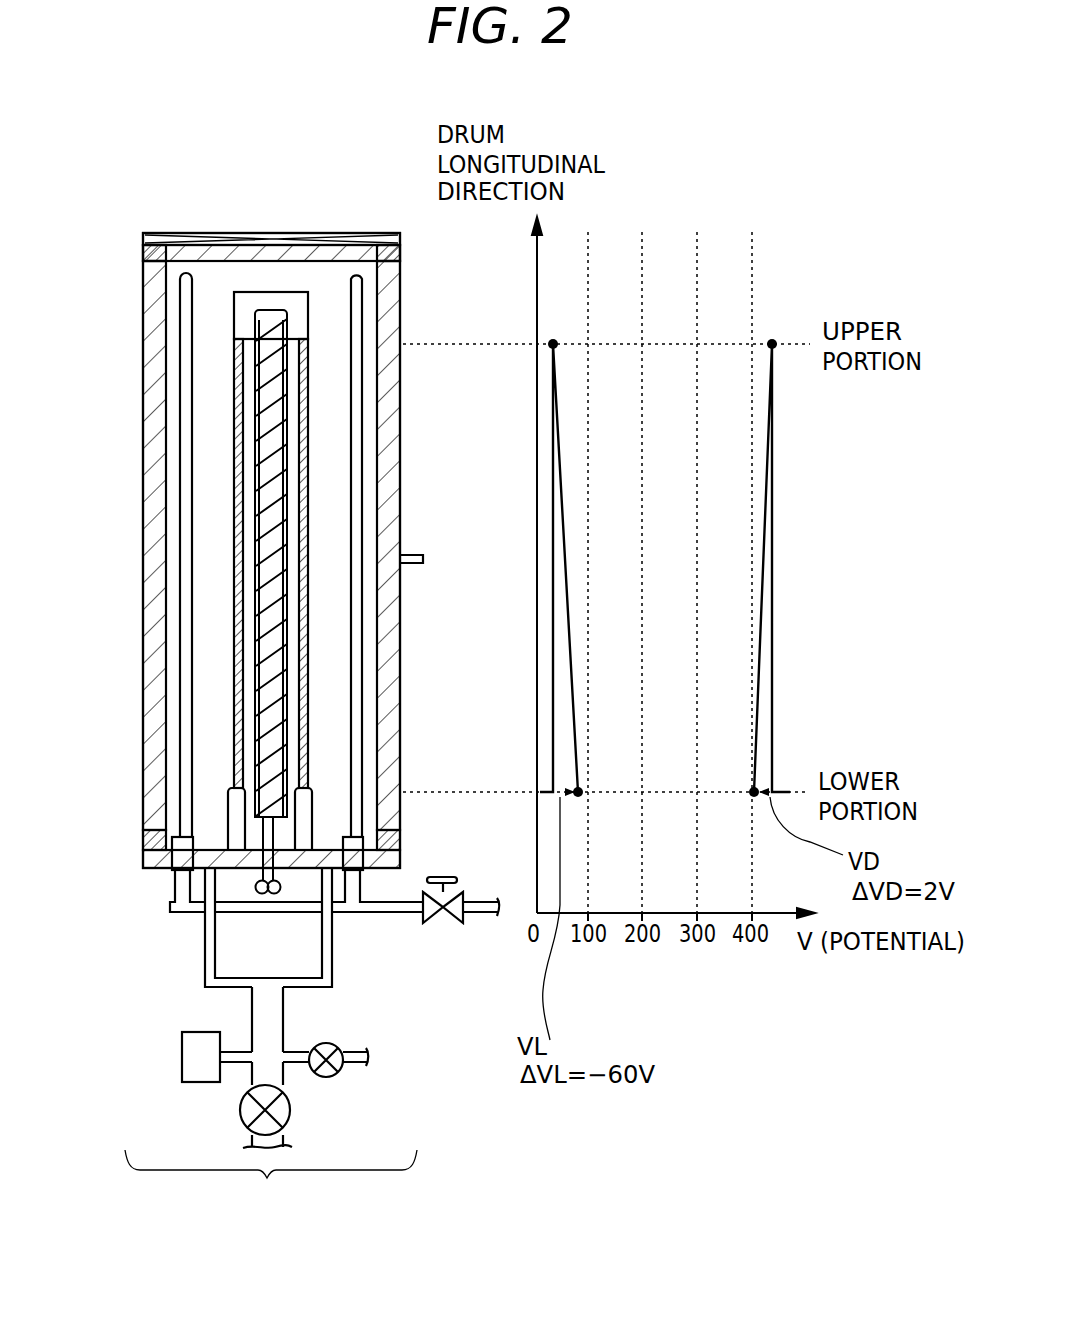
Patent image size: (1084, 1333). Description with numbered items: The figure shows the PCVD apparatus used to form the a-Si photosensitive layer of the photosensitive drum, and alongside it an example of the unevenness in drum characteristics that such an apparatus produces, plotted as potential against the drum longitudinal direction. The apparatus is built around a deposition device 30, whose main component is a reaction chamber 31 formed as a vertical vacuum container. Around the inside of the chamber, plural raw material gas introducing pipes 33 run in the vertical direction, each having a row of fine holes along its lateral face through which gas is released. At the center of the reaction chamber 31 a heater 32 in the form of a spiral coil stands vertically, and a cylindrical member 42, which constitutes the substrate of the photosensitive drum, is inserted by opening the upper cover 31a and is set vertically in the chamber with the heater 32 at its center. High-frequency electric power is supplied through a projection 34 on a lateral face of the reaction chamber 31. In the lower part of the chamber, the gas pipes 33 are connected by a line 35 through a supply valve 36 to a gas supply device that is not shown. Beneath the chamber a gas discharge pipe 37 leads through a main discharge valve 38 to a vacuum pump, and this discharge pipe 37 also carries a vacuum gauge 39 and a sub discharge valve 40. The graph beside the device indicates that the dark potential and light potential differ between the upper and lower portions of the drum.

The deposition device 30 is at (271, 1179).
The reaction chamber 31 is at (400, 286).
The upper cover 31a is at (278, 233).
The heater 32 is at (263, 400).
The raw material gas introducing pipes 33 is at (183, 623).
The projection 34 is at (412, 557).
The pipe 35 is at (378, 913).
The supply valve 36 is at (437, 923).
The gas discharge pipe 37 is at (205, 945).
The main discharge valve 38 is at (290, 1112).
The vacuum gauge 39 is at (182, 1058).
The sub discharge valve 40 is at (330, 1043).
The cylindrical member 42 is at (308, 372).